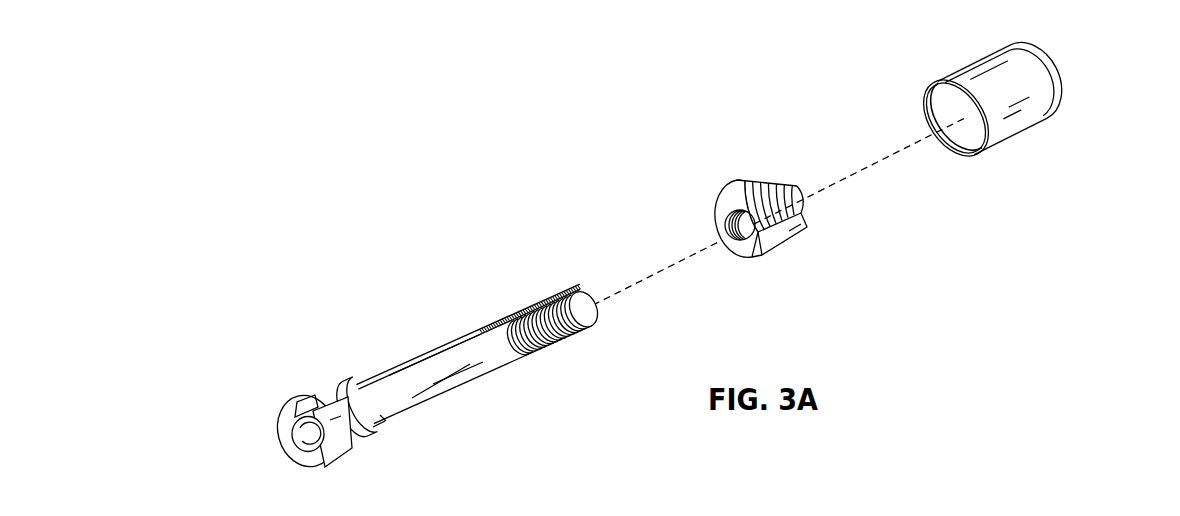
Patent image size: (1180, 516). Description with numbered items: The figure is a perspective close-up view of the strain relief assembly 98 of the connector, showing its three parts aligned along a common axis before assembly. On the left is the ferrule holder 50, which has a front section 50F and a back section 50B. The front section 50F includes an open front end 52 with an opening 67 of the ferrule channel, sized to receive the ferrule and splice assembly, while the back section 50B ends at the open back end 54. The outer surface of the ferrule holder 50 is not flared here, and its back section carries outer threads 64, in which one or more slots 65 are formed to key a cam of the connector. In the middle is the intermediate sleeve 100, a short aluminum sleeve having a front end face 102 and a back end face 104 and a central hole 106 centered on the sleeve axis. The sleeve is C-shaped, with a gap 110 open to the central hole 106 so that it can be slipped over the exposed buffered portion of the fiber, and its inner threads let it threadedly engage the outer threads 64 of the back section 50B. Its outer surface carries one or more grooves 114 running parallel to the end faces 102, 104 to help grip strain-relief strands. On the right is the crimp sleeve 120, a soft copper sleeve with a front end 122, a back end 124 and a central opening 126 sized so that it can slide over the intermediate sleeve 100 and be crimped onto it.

The strain relief assembly 98 is at (428, 149).
The ferrule holder 50 is at (419, 350).
The back section 50B is at (567, 349).
The front section 50F is at (364, 461).
The open front end 52 is at (283, 418).
The opening 67 is at (307, 438).
The open back end 54 is at (590, 307).
The outer threads 64 is at (521, 298).
The slots 65 is at (555, 298).
The intermediate sleeve 100 is at (753, 211).
The front end face 102 is at (752, 253).
The back end face 104 is at (778, 179).
The central hole 106 is at (717, 230).
The gap 110 is at (784, 233).
The grooves 114 is at (767, 177).
The crimp sleeve 120 is at (992, 124).
The front end 122 is at (970, 145).
The back end 124 is at (1057, 63).
The central opening 126 is at (947, 103).